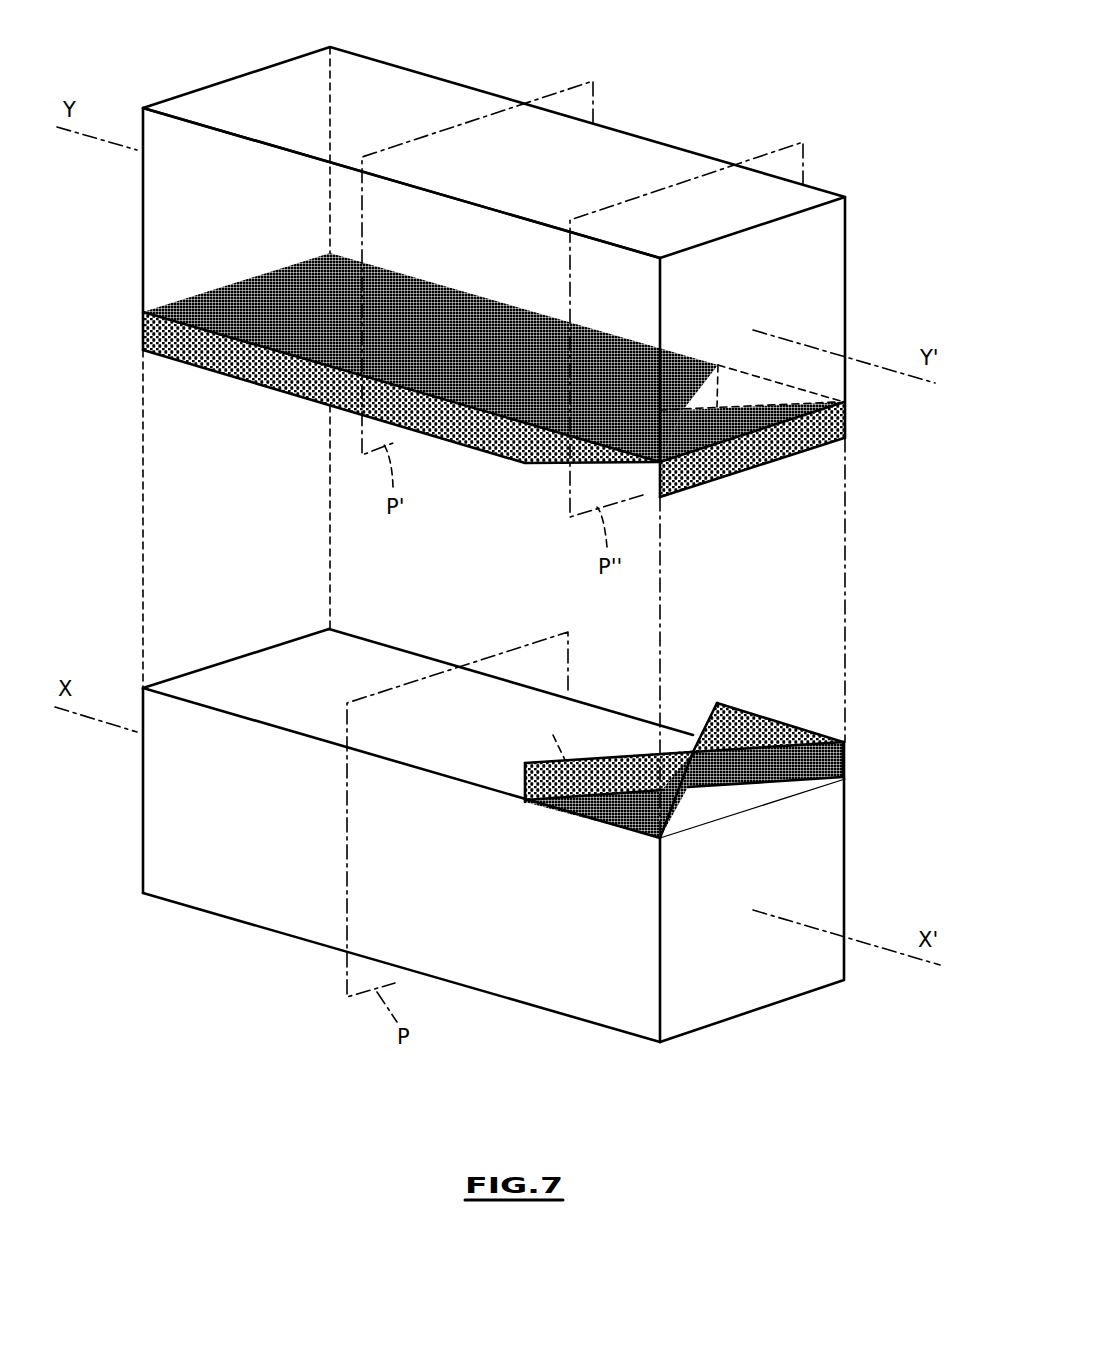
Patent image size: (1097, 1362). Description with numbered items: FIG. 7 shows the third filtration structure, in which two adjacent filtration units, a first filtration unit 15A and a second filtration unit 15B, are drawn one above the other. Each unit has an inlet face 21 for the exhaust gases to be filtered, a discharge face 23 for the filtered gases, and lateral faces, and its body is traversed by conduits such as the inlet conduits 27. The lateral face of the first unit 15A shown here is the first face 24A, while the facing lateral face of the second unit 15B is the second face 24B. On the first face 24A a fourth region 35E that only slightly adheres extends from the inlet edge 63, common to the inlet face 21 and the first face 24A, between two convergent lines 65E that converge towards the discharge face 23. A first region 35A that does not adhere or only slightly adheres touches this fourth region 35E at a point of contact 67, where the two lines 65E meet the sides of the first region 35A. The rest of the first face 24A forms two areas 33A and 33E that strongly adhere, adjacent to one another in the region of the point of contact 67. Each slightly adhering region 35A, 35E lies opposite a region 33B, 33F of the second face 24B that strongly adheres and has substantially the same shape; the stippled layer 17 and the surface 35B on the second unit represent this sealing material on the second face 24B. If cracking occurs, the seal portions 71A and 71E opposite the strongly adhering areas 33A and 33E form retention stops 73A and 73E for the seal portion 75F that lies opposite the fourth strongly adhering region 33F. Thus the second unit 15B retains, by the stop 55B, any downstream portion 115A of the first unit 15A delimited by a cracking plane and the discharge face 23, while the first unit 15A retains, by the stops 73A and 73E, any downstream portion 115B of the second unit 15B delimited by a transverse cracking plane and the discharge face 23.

The second filtration unit 15B is at (717, 150).
The first filtration unit 15A is at (524, 1020).
The inlet face 21 is at (247, 92).
The discharge face 23 is at (820, 265).
The downstream portion of the second filtration unit 115B is at (618, 140).
The downstream portion of the first filtration unit 115A is at (588, 997).
The layer 17 is at (452, 440).
The layer surface 35B is at (600, 435).
The fourth region that strongly adheres 33F is at (417, 407).
The seal portion 75F is at (237, 378).
The second face 24B is at (316, 415).
The first face 24A is at (268, 670).
The point of contact 67 is at (688, 408).
The stop 55B is at (812, 430).
The inlet conduits 27 is at (680, 450).
The region that strongly adheres 33B is at (747, 430).
The inlet edge 63 is at (173, 675).
The fourth region that only slightly adheres 35E is at (397, 662).
The first region that only slightly adheres 35A is at (695, 810).
The convergent lines 65E is at (683, 757).
The area that strongly adheres 33A is at (612, 828).
The area that strongly adheres 33E is at (777, 730).
The retention stop 73A is at (567, 817).
The retention stop 73E is at (743, 720).
The seal portion 71A is at (500, 796).
The seal portion 71E is at (800, 782).